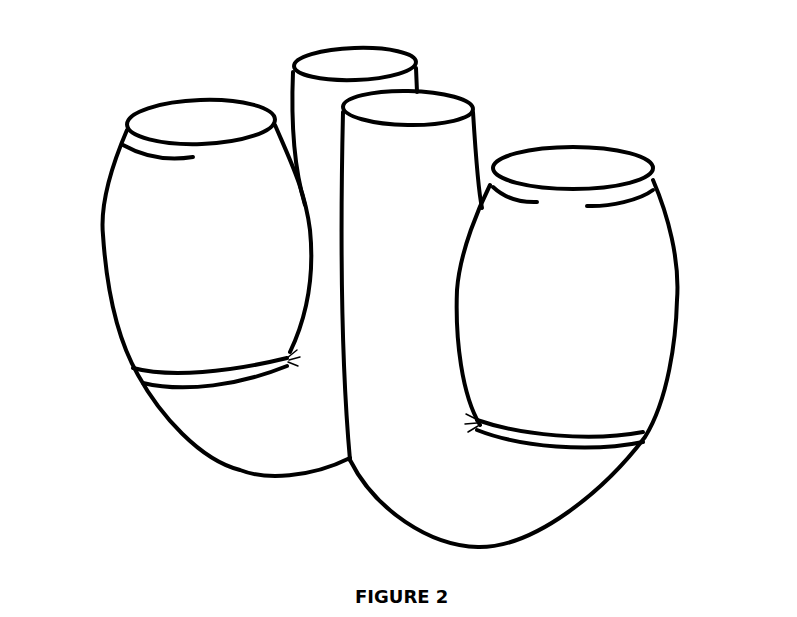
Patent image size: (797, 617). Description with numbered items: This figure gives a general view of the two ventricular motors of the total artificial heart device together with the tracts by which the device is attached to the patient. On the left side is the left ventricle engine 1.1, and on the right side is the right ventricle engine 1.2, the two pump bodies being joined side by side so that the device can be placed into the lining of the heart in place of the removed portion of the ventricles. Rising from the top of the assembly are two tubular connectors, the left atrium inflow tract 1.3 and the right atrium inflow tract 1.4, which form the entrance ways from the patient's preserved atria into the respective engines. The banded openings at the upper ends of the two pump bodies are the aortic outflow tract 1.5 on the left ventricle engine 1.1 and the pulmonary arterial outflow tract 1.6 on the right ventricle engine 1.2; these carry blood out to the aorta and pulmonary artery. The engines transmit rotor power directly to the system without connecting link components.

The left ventricle engine 1.1 is at (168, 263).
The right ventricle engine 1.2 is at (610, 283).
The left atrium inflow tract 1.3 is at (337, 63).
The right atrium inflow tract 1.4 is at (428, 108).
The aortic outflow tract 1.5 is at (178, 123).
The pulmonary arterial outflow tract 1.6 is at (567, 165).